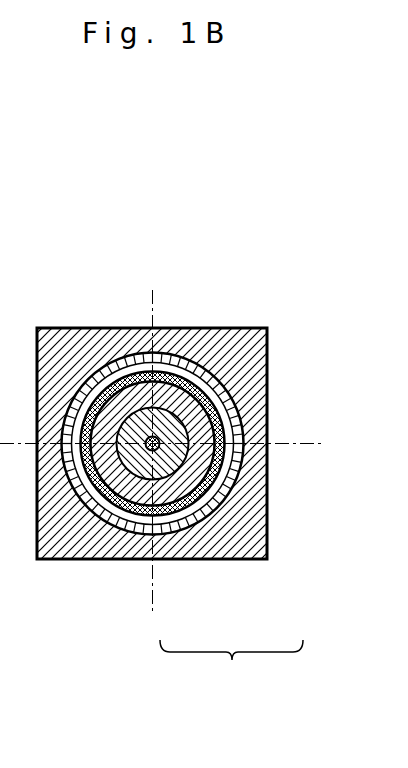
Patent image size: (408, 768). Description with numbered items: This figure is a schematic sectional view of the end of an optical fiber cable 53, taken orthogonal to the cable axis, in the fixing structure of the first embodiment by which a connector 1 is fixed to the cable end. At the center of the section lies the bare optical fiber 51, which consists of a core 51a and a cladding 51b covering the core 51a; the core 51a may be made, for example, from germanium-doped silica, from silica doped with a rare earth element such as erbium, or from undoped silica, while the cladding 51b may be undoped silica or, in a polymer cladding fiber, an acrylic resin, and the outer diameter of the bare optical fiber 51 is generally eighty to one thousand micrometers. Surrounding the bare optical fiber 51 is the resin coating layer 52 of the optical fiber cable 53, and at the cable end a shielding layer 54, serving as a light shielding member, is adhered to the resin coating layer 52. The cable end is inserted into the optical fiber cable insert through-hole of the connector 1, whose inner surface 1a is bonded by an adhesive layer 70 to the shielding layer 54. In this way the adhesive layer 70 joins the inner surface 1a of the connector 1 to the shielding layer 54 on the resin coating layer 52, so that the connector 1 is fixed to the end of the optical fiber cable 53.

The connector 1 is at (180, 328).
The inner surface 1a is at (197, 358).
The adhesive layer 70 is at (267, 345).
The shielding layer 54 is at (230, 392).
The resin coating layer 52 is at (197, 428).
The optical fiber cable 53 is at (230, 462).
The bare optical fiber 51 is at (231, 669).
The core 51a is at (158, 458).
The cladding 51b is at (173, 462).